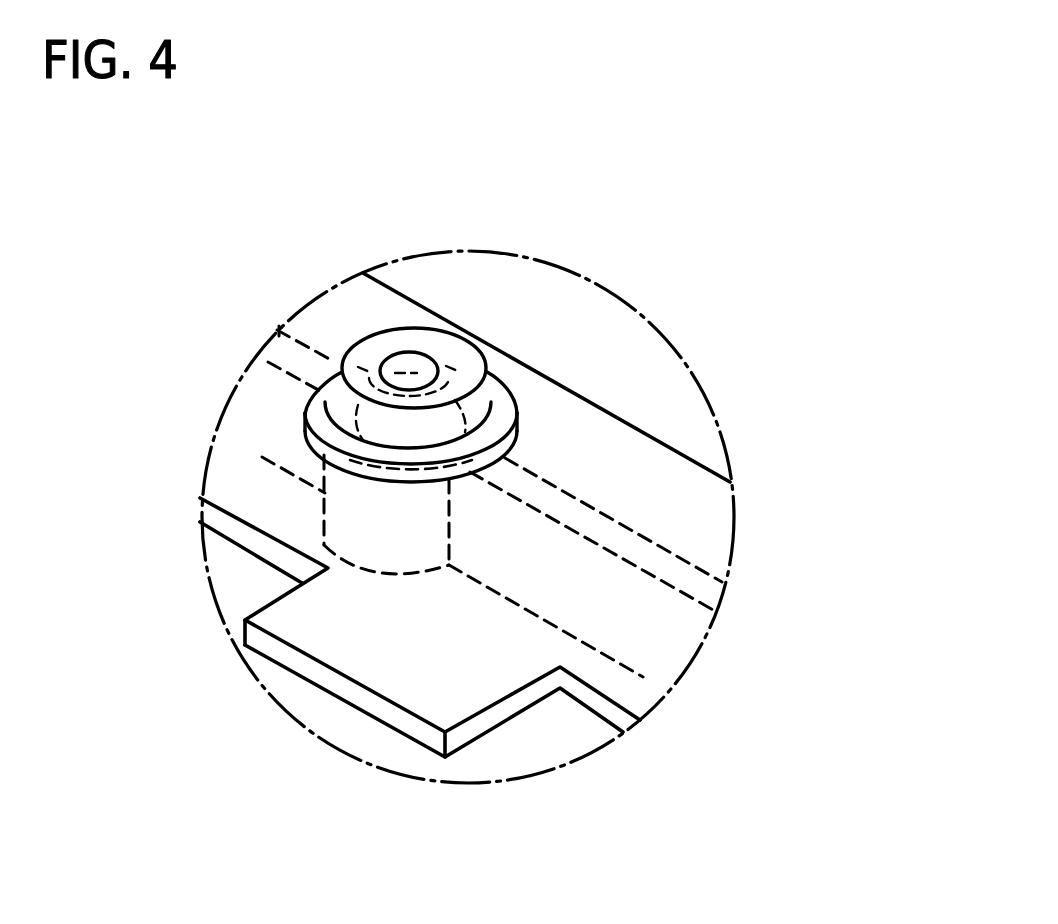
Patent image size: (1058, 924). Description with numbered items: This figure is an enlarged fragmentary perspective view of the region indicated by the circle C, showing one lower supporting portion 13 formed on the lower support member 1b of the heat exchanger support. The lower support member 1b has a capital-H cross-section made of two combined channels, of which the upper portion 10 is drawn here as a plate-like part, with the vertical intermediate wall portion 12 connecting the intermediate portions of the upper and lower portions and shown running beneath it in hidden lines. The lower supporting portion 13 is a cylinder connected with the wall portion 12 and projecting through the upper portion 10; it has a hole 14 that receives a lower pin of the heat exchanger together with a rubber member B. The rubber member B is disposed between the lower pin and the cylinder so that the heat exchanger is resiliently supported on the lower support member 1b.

The lower support member 1b is at (550, 420).
The upper portion 10 is at (597, 638).
The vertical intermediate wall portion 12 is at (547, 498).
The lower supporting portion 13 is at (357, 520).
The hole 14 is at (403, 422).
The rubber member B is at (353, 320).
The circle C is at (563, 763).